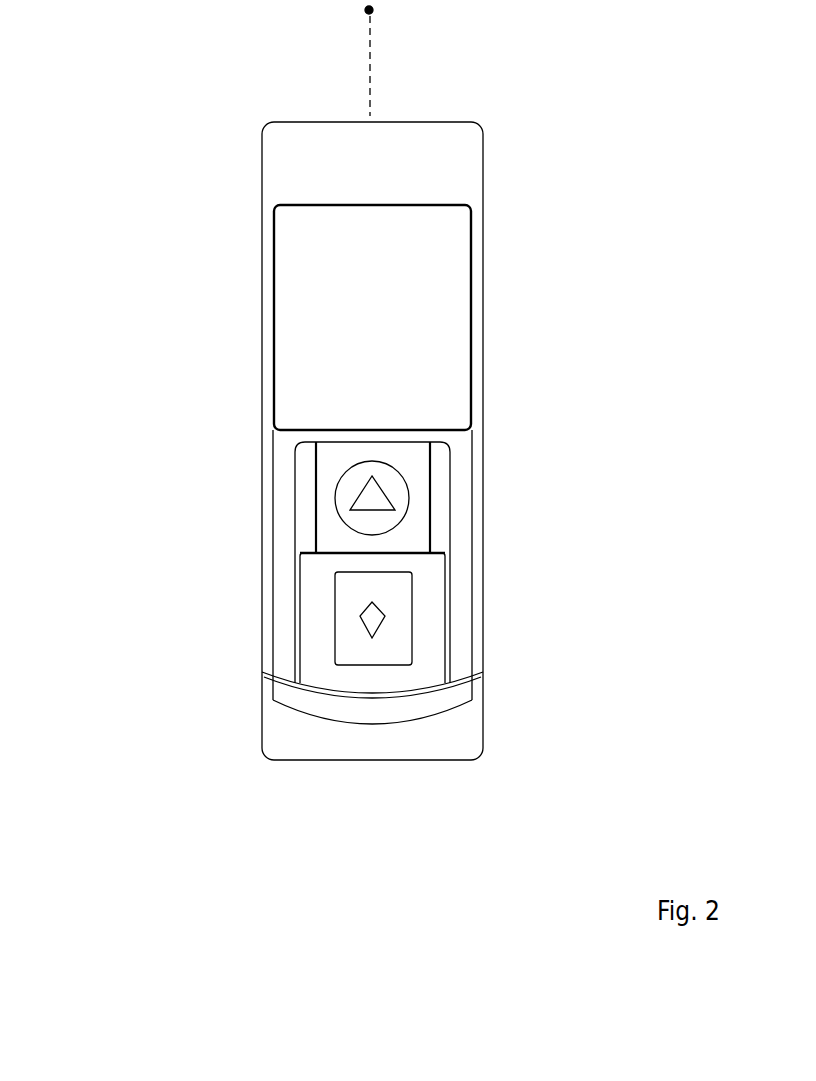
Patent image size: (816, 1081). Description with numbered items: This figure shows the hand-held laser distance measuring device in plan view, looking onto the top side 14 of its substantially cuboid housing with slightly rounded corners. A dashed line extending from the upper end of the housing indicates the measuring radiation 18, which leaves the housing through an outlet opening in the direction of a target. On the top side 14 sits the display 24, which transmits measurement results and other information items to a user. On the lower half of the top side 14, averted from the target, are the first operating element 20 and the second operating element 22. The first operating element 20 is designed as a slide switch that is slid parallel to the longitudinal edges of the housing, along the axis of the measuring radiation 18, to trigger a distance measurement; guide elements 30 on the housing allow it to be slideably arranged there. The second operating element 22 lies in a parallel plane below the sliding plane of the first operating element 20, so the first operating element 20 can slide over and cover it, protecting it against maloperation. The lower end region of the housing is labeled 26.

The top side 14 is at (427, 173).
The measuring radiation 18 is at (335, 58).
The first operating element 20 is at (375, 616).
The second operating element 22 is at (372, 502).
The display 24 is at (438, 285).
The bottom end portion 26 is at (242, 760).
The guide elements 30 is at (303, 501).